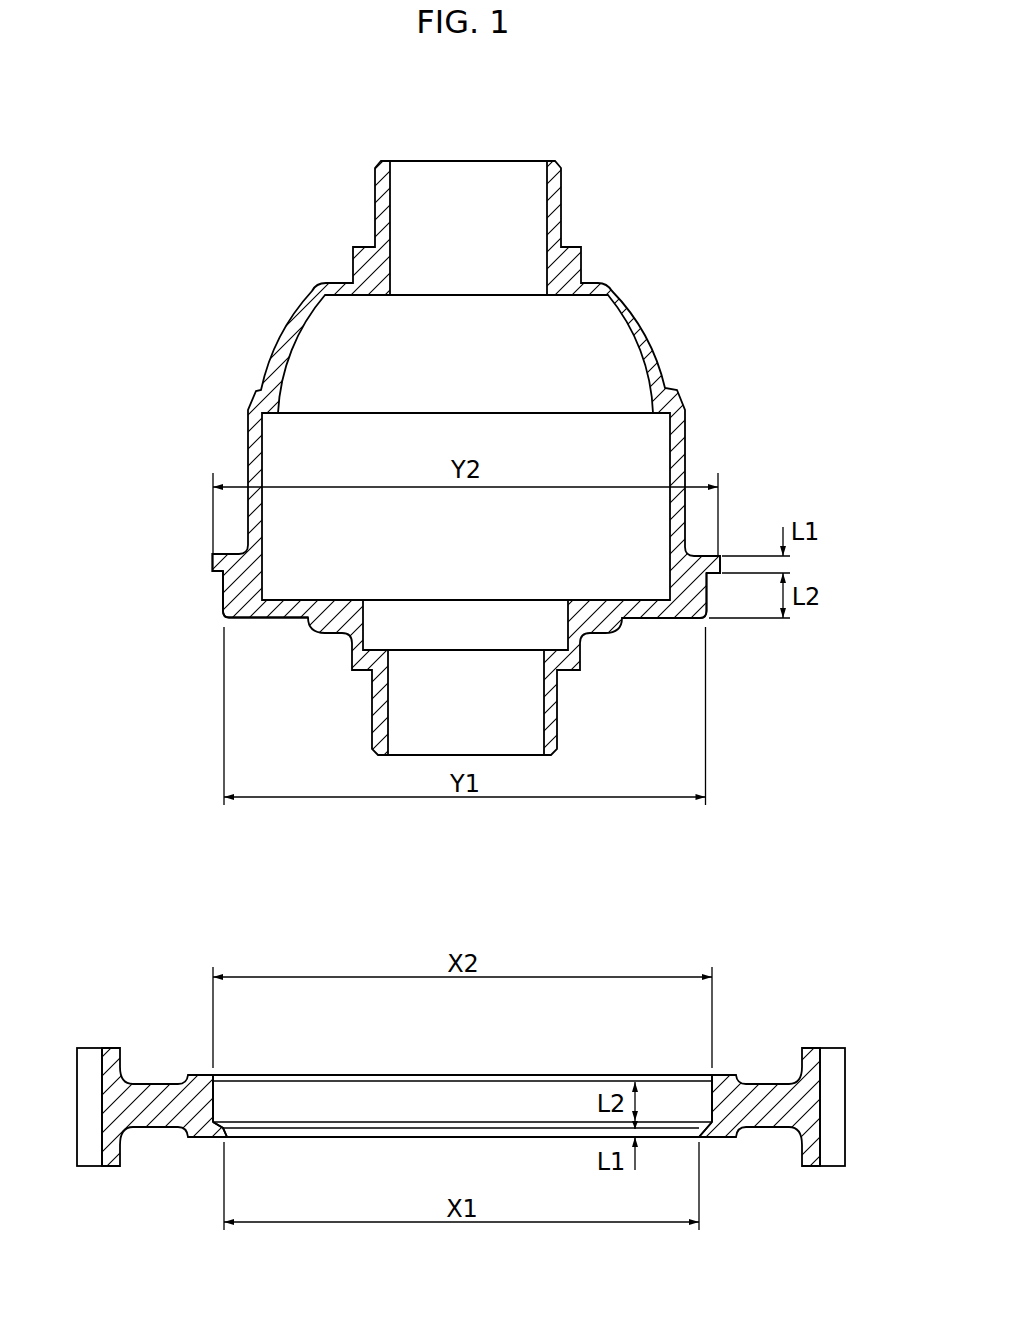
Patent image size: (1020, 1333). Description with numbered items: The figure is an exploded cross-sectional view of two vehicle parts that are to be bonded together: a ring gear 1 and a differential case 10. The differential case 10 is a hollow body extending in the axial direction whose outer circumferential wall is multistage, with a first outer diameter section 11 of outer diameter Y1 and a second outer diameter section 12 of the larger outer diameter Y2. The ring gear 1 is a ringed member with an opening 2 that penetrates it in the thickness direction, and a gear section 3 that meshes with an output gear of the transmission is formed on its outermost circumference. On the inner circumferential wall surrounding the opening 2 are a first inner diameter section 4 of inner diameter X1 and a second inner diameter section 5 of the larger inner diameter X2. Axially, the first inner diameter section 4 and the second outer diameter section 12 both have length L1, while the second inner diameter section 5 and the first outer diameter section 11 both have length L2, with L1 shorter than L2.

The ring gear 1 is at (175, 945).
The opening 2 is at (427, 1105).
The gear section 3 is at (90, 1105).
The first inner diameter section 4 is at (225, 1133).
The second inner diameter section 5 is at (214, 1100).
The differential case 10 is at (283, 175).
The first outer diameter section 11 is at (222, 589).
The second outer diameter section 12 is at (213, 563).